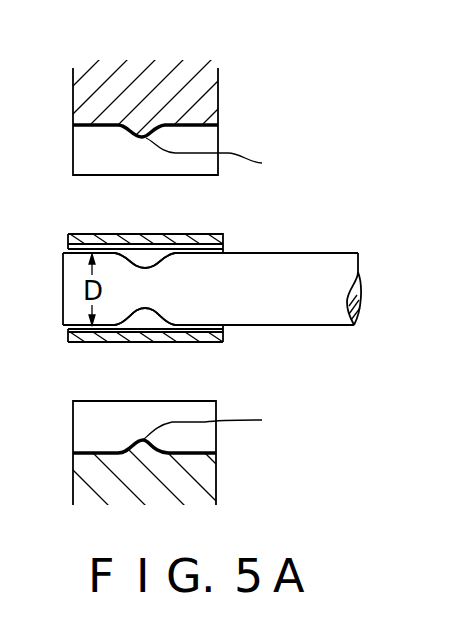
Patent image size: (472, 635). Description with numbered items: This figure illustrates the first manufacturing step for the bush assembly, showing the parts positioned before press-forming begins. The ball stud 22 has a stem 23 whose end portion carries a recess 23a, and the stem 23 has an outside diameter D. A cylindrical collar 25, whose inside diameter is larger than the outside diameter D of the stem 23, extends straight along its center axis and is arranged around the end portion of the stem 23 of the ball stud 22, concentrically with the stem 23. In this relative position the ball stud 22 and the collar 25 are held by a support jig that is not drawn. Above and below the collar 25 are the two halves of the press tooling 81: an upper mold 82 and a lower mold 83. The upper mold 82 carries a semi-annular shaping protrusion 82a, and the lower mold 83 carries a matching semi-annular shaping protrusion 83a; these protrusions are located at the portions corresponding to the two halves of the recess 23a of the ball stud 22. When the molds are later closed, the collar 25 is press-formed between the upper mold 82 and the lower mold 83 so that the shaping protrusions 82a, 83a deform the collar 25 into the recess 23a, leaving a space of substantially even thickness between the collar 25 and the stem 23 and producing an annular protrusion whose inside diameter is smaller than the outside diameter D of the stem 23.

The press die set 81 is at (163, 93).
The upper mold 82 is at (218, 102).
The semi-annular shaping protrusion 82a is at (231, 160).
The lower mold 83 is at (216, 475).
The semi-annular shaping protrusion 83a is at (230, 423).
The ball stud 22 is at (302, 326).
The stem 23 is at (307, 260).
The recess 23a is at (137, 266).
The collar 25 is at (212, 343).